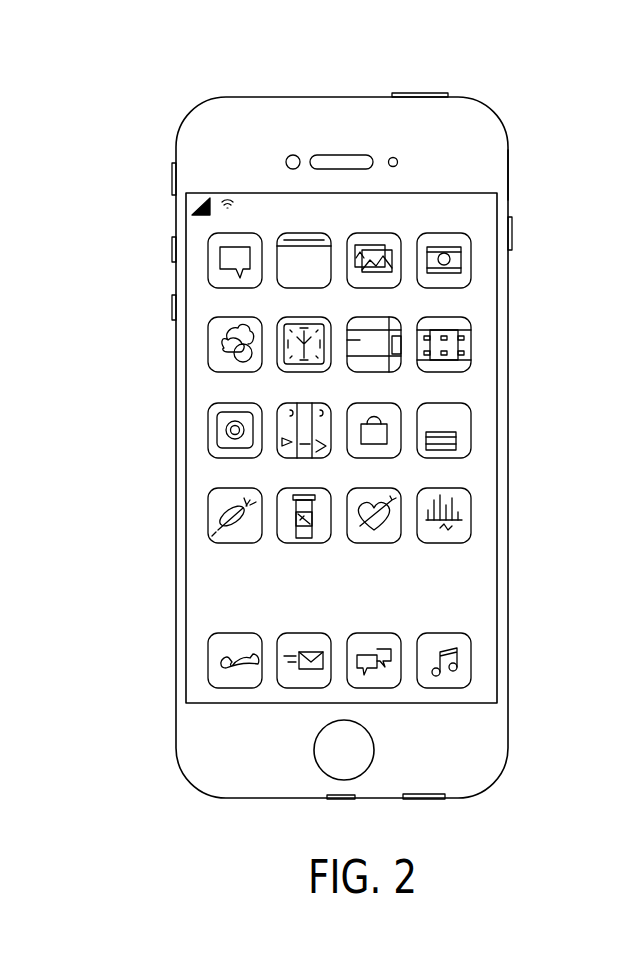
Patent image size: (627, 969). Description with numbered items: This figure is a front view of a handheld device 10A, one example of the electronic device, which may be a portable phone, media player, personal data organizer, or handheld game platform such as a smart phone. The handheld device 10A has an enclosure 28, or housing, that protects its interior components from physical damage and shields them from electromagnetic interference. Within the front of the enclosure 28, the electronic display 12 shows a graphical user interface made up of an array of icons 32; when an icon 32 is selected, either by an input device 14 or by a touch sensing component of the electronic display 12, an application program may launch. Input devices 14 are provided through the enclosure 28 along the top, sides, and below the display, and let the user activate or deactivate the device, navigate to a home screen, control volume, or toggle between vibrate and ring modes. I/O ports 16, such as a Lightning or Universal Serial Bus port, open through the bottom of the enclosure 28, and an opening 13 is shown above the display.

The handheld device 10A is at (164, 86).
The electronic display 12 is at (497, 575).
The speaker / sensor port 13 is at (295, 155).
The input devices 14 is at (419, 93).
The I/O ports 16 is at (230, 798).
The enclosure 28 is at (510, 178).
The icons 32 is at (473, 387).